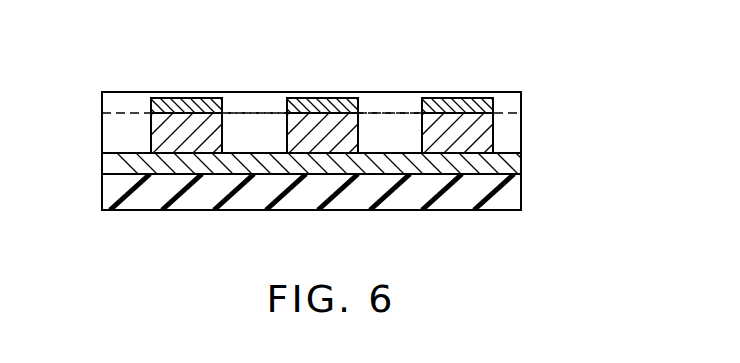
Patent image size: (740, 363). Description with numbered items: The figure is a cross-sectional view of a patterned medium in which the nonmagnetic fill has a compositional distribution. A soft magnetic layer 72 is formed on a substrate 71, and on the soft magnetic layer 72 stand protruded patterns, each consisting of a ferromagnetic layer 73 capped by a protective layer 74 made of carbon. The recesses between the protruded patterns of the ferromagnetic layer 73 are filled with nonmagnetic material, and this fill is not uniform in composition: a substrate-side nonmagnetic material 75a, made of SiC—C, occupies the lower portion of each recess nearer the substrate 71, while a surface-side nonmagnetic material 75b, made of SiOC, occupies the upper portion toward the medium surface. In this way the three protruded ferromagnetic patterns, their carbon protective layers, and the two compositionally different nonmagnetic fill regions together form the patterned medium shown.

The substrate 71 is at (510, 198).
The soft magnetic layer 72 is at (510, 162).
The ferromagnetic layer 73 is at (188, 108).
The protective layer 74 is at (323, 100).
The substrate-side nonmagnetic material 75a is at (390, 133).
The surface-side nonmagnetic material 75b is at (253, 100).